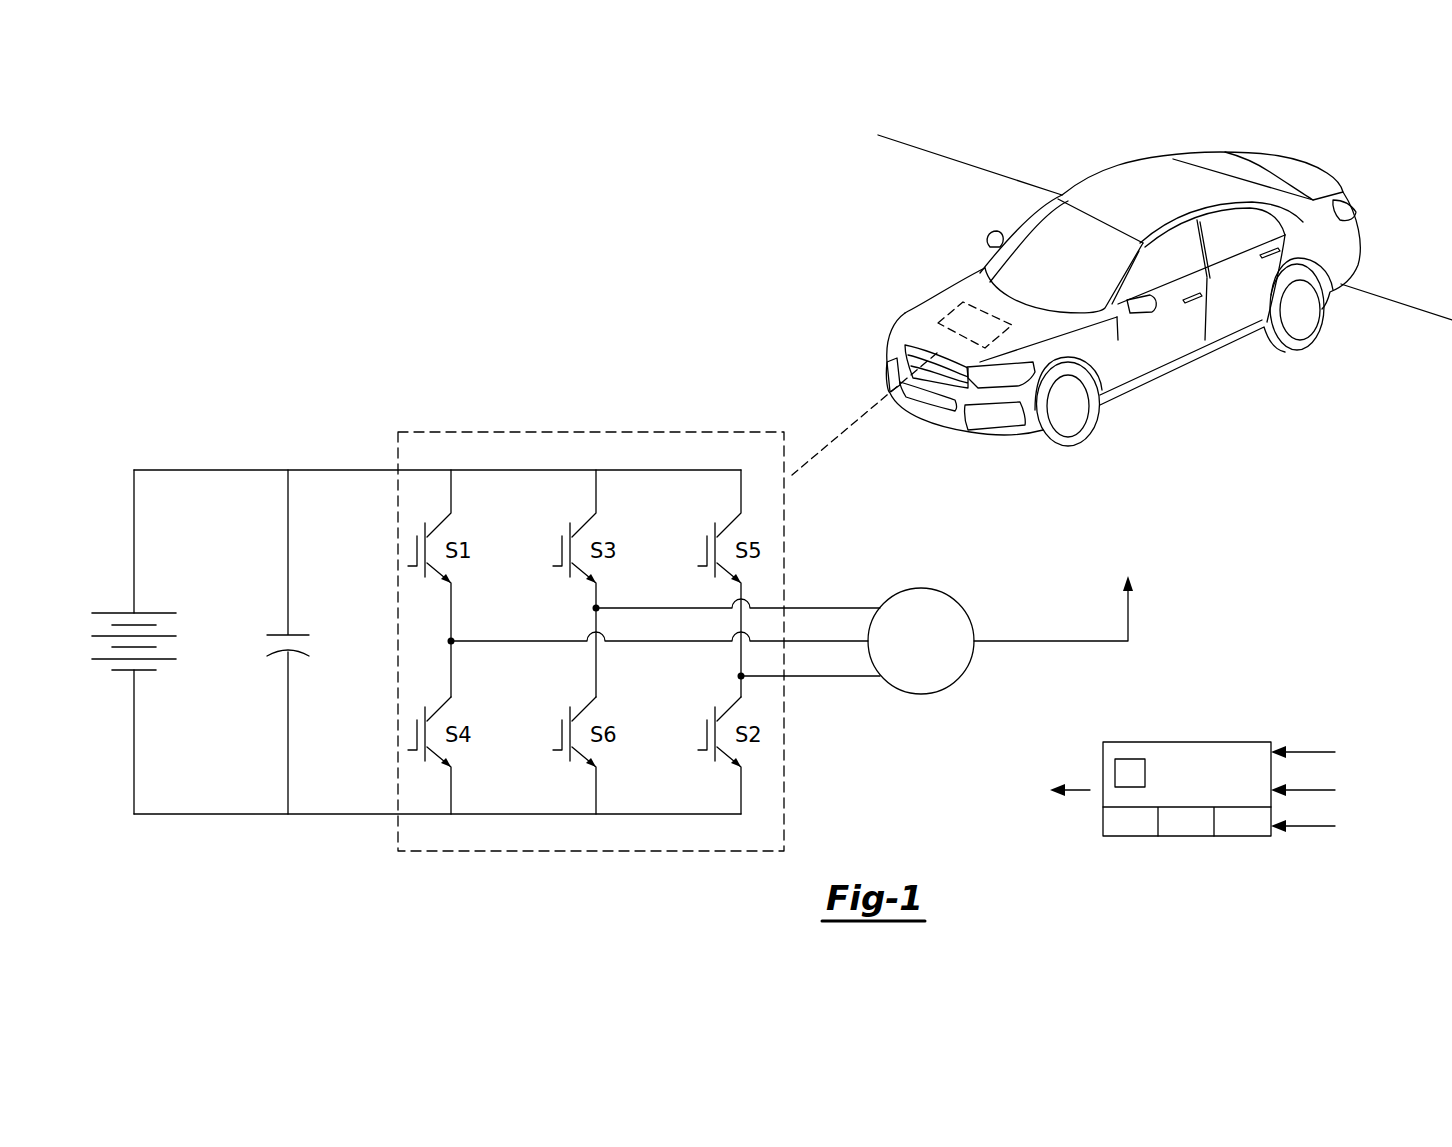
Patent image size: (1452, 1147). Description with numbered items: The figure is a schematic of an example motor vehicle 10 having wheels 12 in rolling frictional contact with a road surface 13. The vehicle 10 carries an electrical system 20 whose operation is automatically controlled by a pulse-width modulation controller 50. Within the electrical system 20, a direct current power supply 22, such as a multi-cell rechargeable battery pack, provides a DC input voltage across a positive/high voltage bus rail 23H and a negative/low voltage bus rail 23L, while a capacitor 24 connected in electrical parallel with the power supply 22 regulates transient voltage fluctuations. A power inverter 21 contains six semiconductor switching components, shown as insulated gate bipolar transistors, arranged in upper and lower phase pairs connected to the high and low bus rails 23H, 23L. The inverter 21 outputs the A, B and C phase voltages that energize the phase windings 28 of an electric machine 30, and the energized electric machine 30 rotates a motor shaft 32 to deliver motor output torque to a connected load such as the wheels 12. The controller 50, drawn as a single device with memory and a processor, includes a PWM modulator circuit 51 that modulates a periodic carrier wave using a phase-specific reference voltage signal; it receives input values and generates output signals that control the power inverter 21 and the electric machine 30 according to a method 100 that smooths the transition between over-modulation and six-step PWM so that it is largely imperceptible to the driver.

The motor vehicle 10 is at (1123, 306).
The wheels 12 is at (1065, 447).
The road surface 13 is at (1393, 325).
The electrical system 20 is at (488, 348).
The power inverter 21 is at (592, 432).
The direct current (DC) power supply 22 is at (116, 602).
The positive/high voltage bus rail 23H is at (200, 470).
The negative/low voltage bus rail 23L is at (200, 814).
The capacitor 24 is at (280, 626).
The phase windings 28 is at (792, 594).
The electric machine 30 is at (918, 588).
The motor shaft 32 is at (1047, 645).
The pulse-width modulation (PWM) controller 50 is at (1209, 764).
The PWM modulator circuit 51 is at (1130, 773).
The method 100 is at (1131, 823).